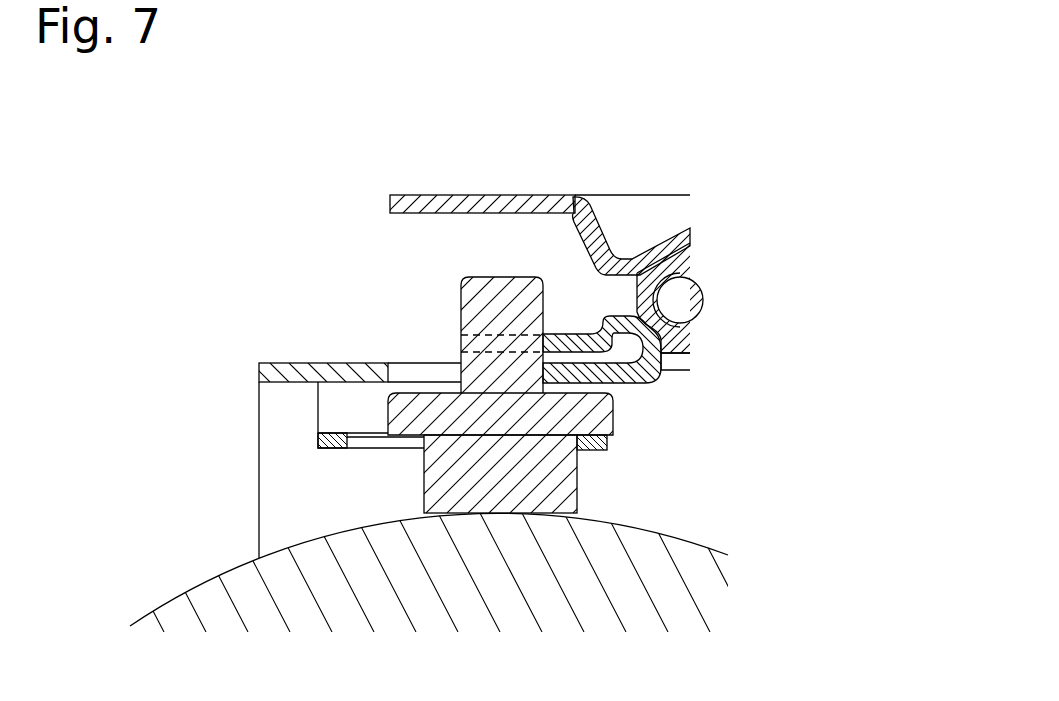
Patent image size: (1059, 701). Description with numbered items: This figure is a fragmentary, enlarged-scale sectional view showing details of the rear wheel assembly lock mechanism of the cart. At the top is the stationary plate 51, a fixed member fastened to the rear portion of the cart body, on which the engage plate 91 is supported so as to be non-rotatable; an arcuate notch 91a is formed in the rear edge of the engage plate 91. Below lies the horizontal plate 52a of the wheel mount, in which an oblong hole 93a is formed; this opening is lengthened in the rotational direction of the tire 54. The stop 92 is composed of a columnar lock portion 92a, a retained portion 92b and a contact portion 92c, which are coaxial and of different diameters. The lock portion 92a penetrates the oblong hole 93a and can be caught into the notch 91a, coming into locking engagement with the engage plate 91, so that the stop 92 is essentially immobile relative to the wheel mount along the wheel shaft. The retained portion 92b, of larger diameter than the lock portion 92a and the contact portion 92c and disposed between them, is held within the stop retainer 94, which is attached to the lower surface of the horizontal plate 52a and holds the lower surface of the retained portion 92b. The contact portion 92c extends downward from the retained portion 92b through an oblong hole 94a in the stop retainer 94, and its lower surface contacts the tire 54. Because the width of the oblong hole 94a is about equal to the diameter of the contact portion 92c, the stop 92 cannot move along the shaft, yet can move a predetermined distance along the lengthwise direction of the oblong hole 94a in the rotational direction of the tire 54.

The stationary plate 51 is at (635, 194).
The horizontal plate 52a is at (285, 363).
The tire 54 is at (185, 588).
The engage plate 91 is at (567, 335).
The arcuate notch 91a is at (502, 343).
The stop 92 is at (466, 385).
The lock portion 92a is at (466, 302).
The retained portion 92b is at (410, 412).
The contact portion 92c is at (458, 493).
The oblong hole 93a is at (427, 372).
The stop retainer 94 is at (480, 432).
The oblong hole 94a is at (375, 442).